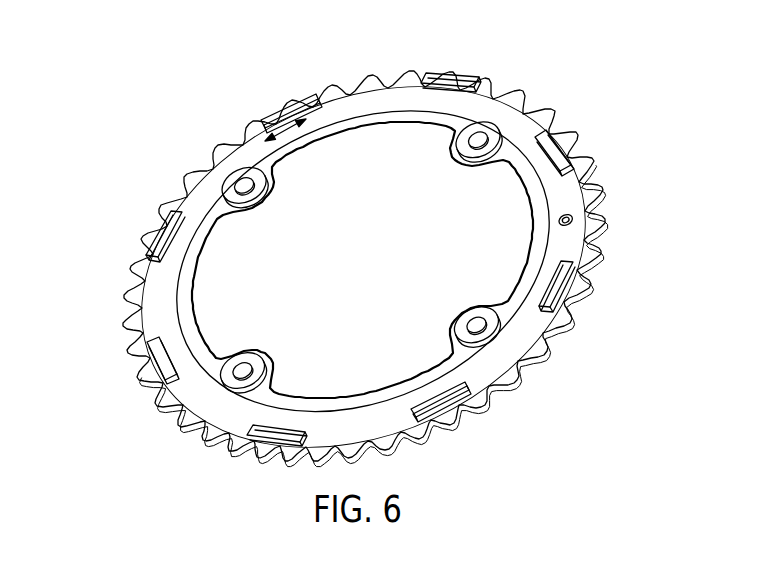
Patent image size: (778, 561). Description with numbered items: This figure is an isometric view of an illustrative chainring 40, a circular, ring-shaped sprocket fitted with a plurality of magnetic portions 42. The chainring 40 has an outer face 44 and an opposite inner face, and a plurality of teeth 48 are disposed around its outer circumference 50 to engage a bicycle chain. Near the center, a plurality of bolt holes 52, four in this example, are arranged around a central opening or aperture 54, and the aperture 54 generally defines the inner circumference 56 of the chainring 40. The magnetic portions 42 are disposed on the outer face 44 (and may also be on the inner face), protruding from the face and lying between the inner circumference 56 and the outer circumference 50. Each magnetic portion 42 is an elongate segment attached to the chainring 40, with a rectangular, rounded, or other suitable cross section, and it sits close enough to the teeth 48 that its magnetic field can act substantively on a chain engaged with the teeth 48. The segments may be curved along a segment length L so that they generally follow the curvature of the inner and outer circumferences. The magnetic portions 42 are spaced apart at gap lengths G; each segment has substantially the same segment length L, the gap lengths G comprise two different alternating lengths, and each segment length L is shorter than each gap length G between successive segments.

The chainring 40 is at (88, 291).
The magnetic portions 42 is at (278, 118).
The outer face 44 is at (531, 124).
The teeth 48 is at (247, 123).
The outer circumference 50 is at (636, 238).
The bolt holes 52 is at (248, 198).
The aperture 54 is at (198, 298).
The inner circumference 56 is at (359, 160).
The gap length G is at (214, 171).
The segment length L is at (292, 133).